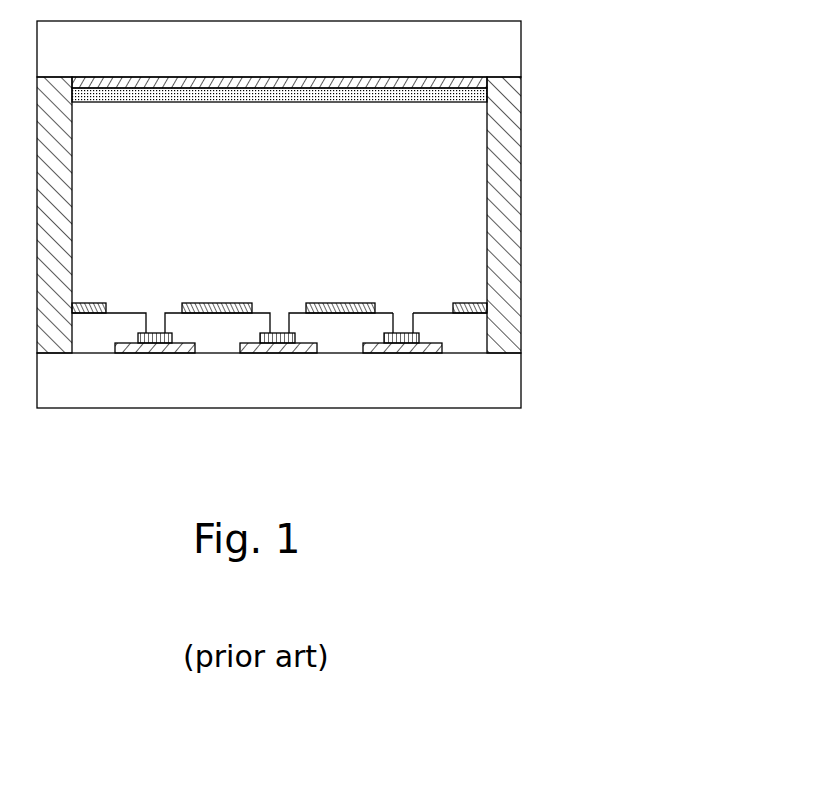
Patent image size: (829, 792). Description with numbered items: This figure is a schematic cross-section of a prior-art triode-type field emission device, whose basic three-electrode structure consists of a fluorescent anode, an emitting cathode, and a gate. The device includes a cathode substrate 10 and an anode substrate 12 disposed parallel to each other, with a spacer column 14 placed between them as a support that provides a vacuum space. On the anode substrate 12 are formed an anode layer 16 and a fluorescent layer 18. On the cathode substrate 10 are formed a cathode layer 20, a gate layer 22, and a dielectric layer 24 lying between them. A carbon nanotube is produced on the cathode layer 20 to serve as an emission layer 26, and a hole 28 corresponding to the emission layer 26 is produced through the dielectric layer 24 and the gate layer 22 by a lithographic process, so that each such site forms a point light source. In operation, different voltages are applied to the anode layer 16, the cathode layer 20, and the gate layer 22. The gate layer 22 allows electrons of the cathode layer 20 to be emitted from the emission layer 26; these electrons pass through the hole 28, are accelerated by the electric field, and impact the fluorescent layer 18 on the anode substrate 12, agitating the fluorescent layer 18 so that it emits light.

The cathode substrate 10 is at (498, 390).
The anode substrate 12 is at (508, 37).
The spacer column 14 is at (515, 190).
The anode layer 16 is at (488, 80).
The fluorescent layer 18 is at (488, 97).
The cathode layer 20 is at (403, 347).
The gate layer 22 is at (480, 308).
The dielectric layer 24 is at (468, 347).
The emission layer 26 is at (418, 335).
The hole 28 is at (402, 316).